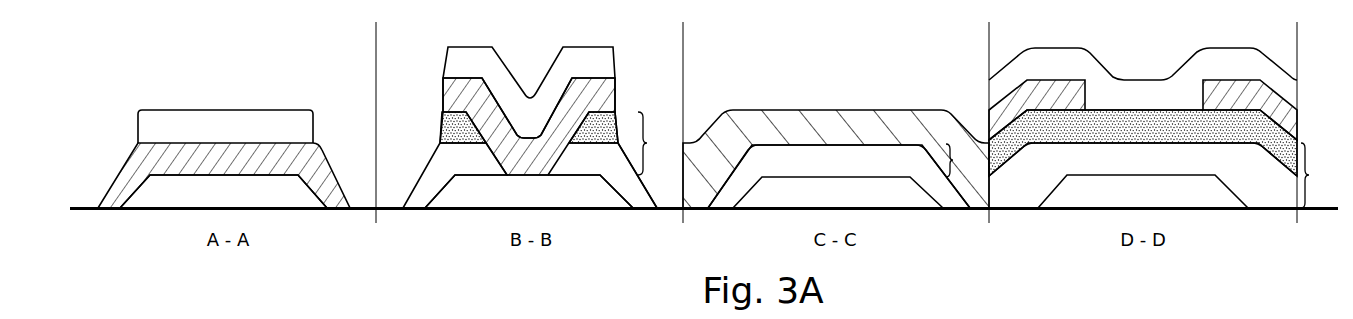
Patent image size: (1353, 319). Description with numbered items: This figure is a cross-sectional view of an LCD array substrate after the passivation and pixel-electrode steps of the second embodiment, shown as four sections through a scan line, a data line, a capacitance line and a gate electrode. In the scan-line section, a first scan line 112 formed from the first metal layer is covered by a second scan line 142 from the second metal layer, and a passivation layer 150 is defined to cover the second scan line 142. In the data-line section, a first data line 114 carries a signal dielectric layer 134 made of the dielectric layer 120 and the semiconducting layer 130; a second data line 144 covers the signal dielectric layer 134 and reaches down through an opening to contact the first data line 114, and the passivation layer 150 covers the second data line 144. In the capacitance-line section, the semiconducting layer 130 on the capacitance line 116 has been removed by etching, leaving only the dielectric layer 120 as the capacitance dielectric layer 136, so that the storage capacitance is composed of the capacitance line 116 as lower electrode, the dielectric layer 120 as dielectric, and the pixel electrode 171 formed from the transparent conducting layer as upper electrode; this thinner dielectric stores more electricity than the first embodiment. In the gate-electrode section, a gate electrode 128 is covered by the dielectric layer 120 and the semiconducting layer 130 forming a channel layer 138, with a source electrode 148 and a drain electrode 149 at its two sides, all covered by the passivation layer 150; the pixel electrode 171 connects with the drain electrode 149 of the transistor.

The first scan line 112 is at (203, 200).
The first data line 114 is at (550, 202).
The capacitance line 116 is at (858, 202).
The dielectric layer 120 is at (488, 168).
The gate electrode 128 is at (1120, 202).
The semiconducting layer 130 is at (1163, 137).
The signal dielectric layer 134 is at (661, 143).
The capacitance dielectric layer 136 is at (967, 160).
The channel layer 138 is at (1323, 175).
The second scan line 142 is at (201, 168).
The second data line 144 is at (612, 108).
The source electrode 148 is at (1080, 106).
The drain electrode 149 is at (1208, 106).
The passivation layer 150 is at (203, 136).
The pixel electrode 171 is at (858, 139).